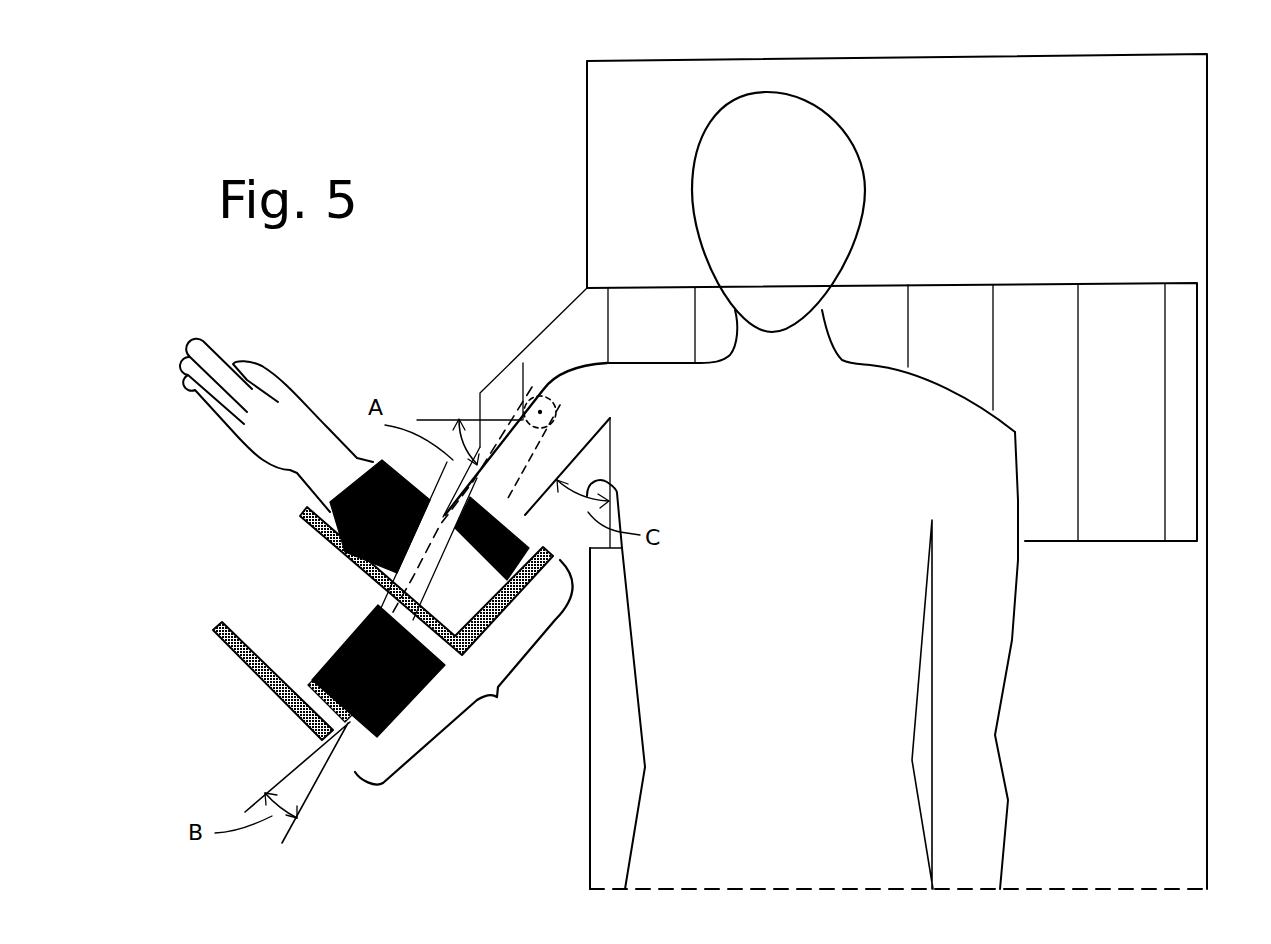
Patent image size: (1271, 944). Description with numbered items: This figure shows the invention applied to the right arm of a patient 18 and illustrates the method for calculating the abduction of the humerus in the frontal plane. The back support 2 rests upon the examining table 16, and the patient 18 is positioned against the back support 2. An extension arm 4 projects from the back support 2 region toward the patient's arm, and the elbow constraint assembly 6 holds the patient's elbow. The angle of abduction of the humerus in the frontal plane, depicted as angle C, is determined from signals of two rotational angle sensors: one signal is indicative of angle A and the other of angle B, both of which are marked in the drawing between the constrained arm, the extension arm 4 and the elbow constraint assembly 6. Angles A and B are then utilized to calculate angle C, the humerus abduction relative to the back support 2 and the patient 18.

The back support 2 is at (1135, 320).
The extension arm 4 is at (543, 438).
The elbow constraint assembly 6 is at (503, 700).
The examining table 16 is at (1130, 200).
The patient 18 is at (870, 793).